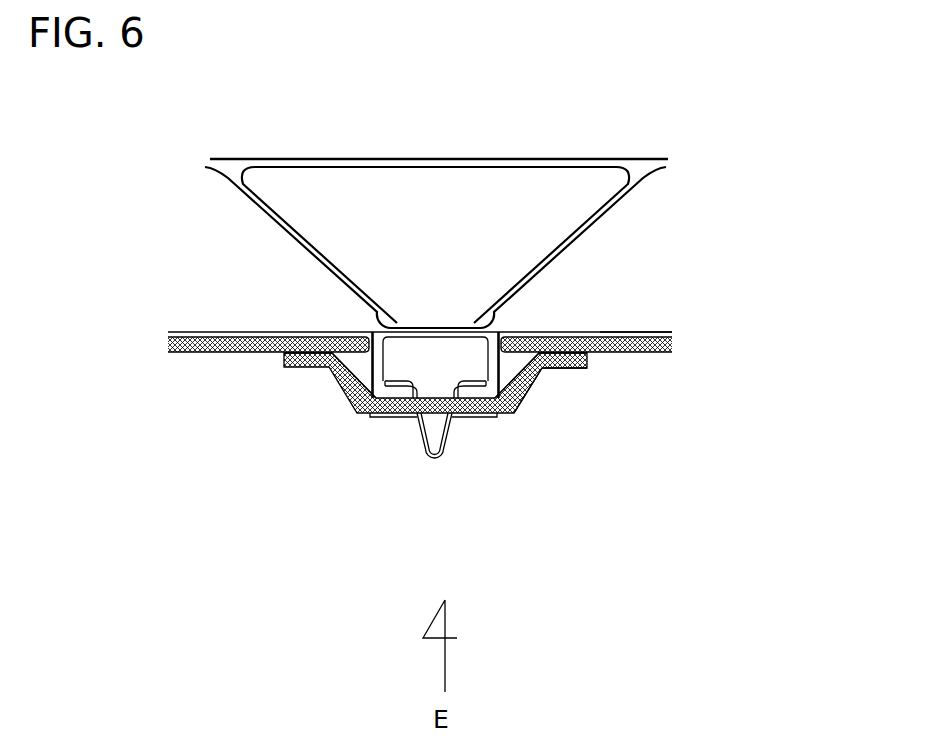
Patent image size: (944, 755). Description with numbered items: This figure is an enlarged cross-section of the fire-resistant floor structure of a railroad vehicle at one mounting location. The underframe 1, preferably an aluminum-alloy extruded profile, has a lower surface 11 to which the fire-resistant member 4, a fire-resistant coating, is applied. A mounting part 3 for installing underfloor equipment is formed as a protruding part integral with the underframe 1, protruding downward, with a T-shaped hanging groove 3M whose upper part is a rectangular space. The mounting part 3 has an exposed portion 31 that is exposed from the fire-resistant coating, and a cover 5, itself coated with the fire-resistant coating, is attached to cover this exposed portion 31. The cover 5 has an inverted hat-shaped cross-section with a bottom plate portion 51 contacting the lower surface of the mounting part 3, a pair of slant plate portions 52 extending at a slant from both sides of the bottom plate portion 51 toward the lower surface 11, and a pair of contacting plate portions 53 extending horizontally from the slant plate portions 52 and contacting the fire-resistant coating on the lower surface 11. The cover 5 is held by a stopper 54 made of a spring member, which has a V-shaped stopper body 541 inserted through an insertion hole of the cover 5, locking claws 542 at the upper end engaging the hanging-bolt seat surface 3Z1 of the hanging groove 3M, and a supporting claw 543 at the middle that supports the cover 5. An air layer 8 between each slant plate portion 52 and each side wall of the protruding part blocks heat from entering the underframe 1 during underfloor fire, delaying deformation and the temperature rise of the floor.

The underframe 1 is at (571, 158).
The mounting part 3 is at (367, 417).
The hanging groove 3M is at (405, 352).
The hanging-bolt seat surface 3Z1 is at (373, 340).
The fire-resistant member 4 is at (673, 345).
The cover 5 is at (341, 390).
The air layer 8 is at (357, 361).
The lower surface 11 is at (612, 365).
The exposed portion 31 is at (348, 398).
The bottom plate portion 51 is at (468, 418).
The slant plate portions 52 is at (527, 398).
The contacting plate portions 53 is at (578, 370).
The stopper 54 is at (444, 493).
The stopper body 541 is at (417, 427).
The locking claws 542 is at (408, 352).
The supporting claw 543 is at (481, 423).